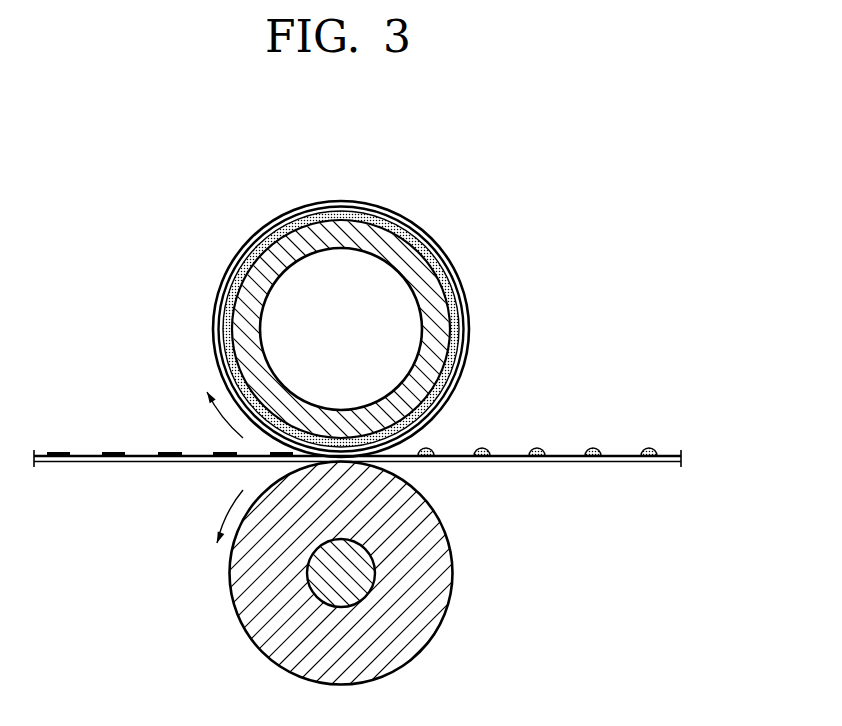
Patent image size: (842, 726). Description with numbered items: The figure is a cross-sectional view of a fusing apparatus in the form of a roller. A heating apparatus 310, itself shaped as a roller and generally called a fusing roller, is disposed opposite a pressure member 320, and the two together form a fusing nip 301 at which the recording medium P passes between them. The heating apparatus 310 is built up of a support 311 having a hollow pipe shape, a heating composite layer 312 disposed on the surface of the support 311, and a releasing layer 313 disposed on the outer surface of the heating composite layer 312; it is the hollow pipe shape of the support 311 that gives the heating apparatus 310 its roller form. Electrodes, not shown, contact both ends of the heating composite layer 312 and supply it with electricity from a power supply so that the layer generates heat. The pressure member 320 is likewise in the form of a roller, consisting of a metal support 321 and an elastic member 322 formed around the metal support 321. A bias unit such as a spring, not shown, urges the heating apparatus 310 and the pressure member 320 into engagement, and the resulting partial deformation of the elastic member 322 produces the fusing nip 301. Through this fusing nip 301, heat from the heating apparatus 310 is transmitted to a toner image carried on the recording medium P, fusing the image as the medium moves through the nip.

The heating apparatus 310 is at (373, 322).
The support 311 is at (435, 358).
The heating composite layer 312 is at (457, 323).
The releasing layer 313 is at (462, 296).
The fusing nip 301 is at (442, 432).
The pressure member 320 is at (374, 508).
The metal support 321 is at (372, 578).
The elastic member 322 is at (440, 545).
The recording medium P is at (87, 462).